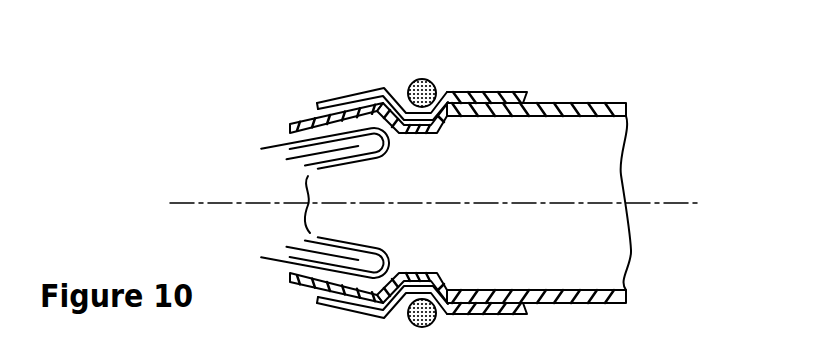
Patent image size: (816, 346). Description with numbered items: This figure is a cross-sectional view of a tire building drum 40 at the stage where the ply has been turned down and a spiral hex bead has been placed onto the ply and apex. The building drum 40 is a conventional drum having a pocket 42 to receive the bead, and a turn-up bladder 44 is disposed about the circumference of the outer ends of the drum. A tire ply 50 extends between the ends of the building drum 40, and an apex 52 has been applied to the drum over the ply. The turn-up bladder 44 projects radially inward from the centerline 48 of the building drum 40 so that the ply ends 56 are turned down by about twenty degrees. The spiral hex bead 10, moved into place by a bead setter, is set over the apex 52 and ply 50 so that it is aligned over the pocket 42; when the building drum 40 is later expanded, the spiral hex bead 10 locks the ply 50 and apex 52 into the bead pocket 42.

The spiral hex bead 10 is at (417, 80).
The building drum 40 is at (597, 167).
The pocket 42 is at (417, 133).
The turn-up bladder 44 is at (300, 160).
The centerline 48 is at (707, 203).
The tire ply 50 is at (595, 103).
The apex 52 is at (483, 98).
The ply ends 56 is at (312, 125).